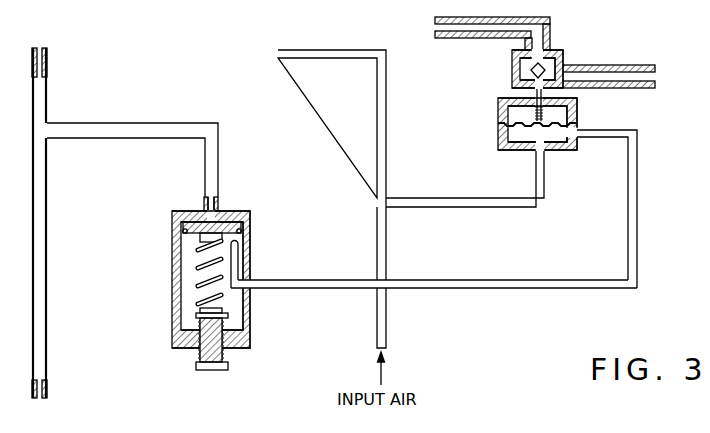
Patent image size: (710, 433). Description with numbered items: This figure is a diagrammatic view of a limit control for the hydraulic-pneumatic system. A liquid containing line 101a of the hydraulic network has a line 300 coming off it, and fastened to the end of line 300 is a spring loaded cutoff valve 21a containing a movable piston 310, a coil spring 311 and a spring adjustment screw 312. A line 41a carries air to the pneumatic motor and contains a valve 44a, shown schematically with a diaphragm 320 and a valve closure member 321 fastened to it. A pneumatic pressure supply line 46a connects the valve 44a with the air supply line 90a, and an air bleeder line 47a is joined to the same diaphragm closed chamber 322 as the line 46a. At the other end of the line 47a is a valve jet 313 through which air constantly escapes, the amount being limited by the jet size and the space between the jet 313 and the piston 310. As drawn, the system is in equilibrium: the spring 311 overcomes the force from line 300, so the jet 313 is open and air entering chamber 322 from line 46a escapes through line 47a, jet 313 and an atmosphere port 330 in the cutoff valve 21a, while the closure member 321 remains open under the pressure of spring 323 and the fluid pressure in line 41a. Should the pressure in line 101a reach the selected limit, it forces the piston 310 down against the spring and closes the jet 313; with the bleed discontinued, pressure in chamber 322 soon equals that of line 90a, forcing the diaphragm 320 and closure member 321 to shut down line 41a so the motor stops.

The liquid containing line 101a is at (47, 93).
The line 300 is at (173, 125).
The spring loaded cutoff valve 21a is at (221, 292).
The atmosphere port 330 is at (250, 318).
The movable piston 310 is at (183, 228).
The coil spring 311 is at (197, 291).
The spring adjustment screw 312 is at (200, 352).
The valve jet 313 is at (238, 250).
The air supply line 90a is at (386, 246).
The pneumatic pressure supply line 46a is at (536, 168).
The valve 44a is at (541, 132).
The diaphragm 320 is at (508, 135).
The diaphragm closed chamber 322 is at (552, 135).
The spring 323 is at (535, 112).
The air bleeder line 47a is at (637, 213).
The line 41a is at (637, 65).
The valve closure member 321 is at (535, 72).